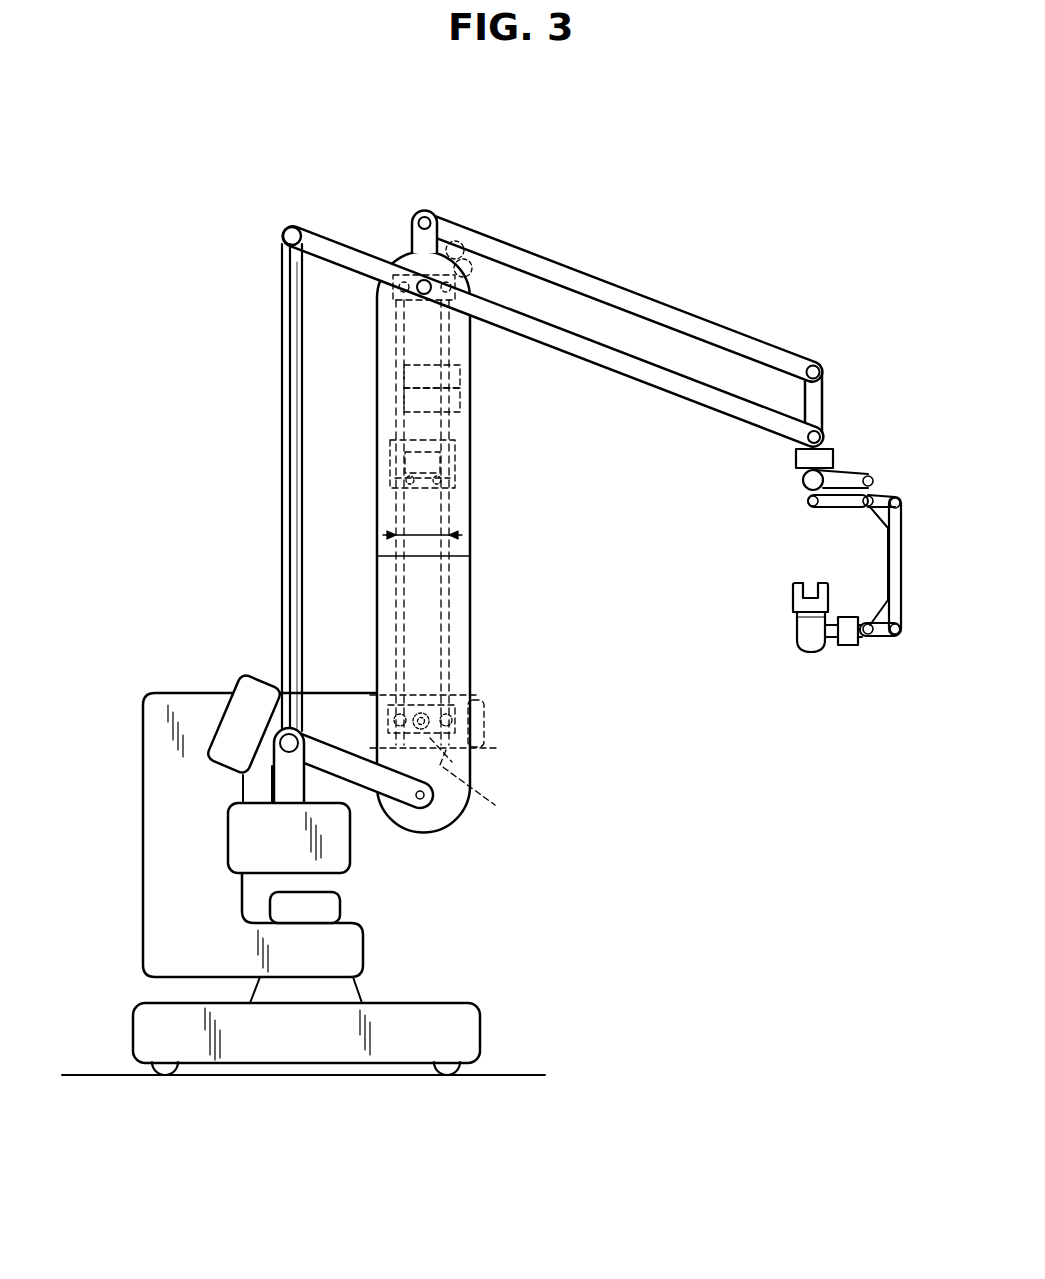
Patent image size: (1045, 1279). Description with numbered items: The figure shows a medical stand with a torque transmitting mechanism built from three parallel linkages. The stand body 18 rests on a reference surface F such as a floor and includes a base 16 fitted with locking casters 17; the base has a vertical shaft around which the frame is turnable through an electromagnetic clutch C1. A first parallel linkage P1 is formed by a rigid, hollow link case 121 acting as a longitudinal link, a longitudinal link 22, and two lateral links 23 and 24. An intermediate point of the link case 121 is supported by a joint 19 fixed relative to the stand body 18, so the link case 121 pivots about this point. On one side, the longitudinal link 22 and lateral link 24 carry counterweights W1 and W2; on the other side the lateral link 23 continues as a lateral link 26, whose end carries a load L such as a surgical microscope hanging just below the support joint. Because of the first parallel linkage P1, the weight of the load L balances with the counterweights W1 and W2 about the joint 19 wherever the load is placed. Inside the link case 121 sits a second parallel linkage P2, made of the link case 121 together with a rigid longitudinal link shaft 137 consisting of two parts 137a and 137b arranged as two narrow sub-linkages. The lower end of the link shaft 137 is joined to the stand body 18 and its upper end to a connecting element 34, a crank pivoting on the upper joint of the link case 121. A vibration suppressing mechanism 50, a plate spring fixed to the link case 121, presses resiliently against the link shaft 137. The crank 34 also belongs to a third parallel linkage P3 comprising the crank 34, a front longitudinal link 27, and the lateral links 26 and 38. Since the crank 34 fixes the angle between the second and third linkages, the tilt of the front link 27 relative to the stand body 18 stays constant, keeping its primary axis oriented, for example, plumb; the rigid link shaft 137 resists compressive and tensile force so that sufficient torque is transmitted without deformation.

The base 16 is at (482, 1020).
The locking casters 17 is at (163, 1078).
The stand body 18 is at (143, 757).
The joint 19 is at (470, 788).
The longitudinal link 22 is at (280, 444).
The lateral link 23 is at (340, 242).
The lateral link 24 is at (362, 787).
The lateral link 26 is at (696, 405).
The front longitudinal link 27 is at (826, 400).
The connecting element 34 is at (410, 226).
The lateral link 38 is at (640, 294).
The vibration suppressing mechanism 50 is at (456, 462).
The link case 121 is at (472, 617).
The longitudinal link shaft 137 is at (556, 364).
The link shaft 137a is at (455, 372).
The link shaft 137b is at (455, 404).
The first parallel linkage P1 is at (280, 539).
The second parallel linkage P2 is at (455, 663).
The third parallel linkage P3 is at (682, 310).
The counterweight W1 is at (228, 848).
The counterweight W2 is at (247, 677).
The electromagnetic clutch C1 is at (342, 905).
The reference surface F is at (536, 1075).
The load L is at (812, 662).